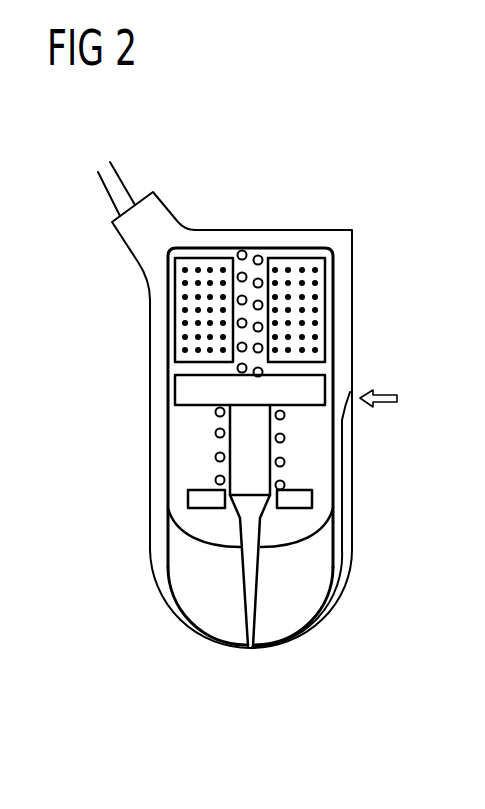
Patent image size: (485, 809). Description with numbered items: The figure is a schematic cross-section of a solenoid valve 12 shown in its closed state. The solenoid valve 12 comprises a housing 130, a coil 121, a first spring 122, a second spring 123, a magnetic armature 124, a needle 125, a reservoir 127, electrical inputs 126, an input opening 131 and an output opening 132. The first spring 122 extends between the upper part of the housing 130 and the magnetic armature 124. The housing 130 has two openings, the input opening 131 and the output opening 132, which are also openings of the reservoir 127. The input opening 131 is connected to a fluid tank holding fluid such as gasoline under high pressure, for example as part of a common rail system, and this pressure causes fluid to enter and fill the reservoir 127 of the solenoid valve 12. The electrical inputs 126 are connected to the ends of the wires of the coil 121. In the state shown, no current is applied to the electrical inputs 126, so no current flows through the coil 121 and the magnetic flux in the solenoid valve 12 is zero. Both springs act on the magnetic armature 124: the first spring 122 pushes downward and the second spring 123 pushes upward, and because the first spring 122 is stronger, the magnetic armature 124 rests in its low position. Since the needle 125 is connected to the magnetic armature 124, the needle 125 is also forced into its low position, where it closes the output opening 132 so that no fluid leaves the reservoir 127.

The solenoid valve 12 is at (257, 160).
The coil 121 is at (295, 257).
The first spring 122 is at (242, 251).
The second spring 123 is at (214, 433).
The magnetic armature 124 is at (245, 468).
The needle 125 is at (250, 595).
The electrical inputs 126 is at (116, 185).
The reservoir 127 is at (308, 604).
The housing 130 is at (323, 237).
The input opening 131 is at (357, 393).
The output opening 132 is at (252, 652).